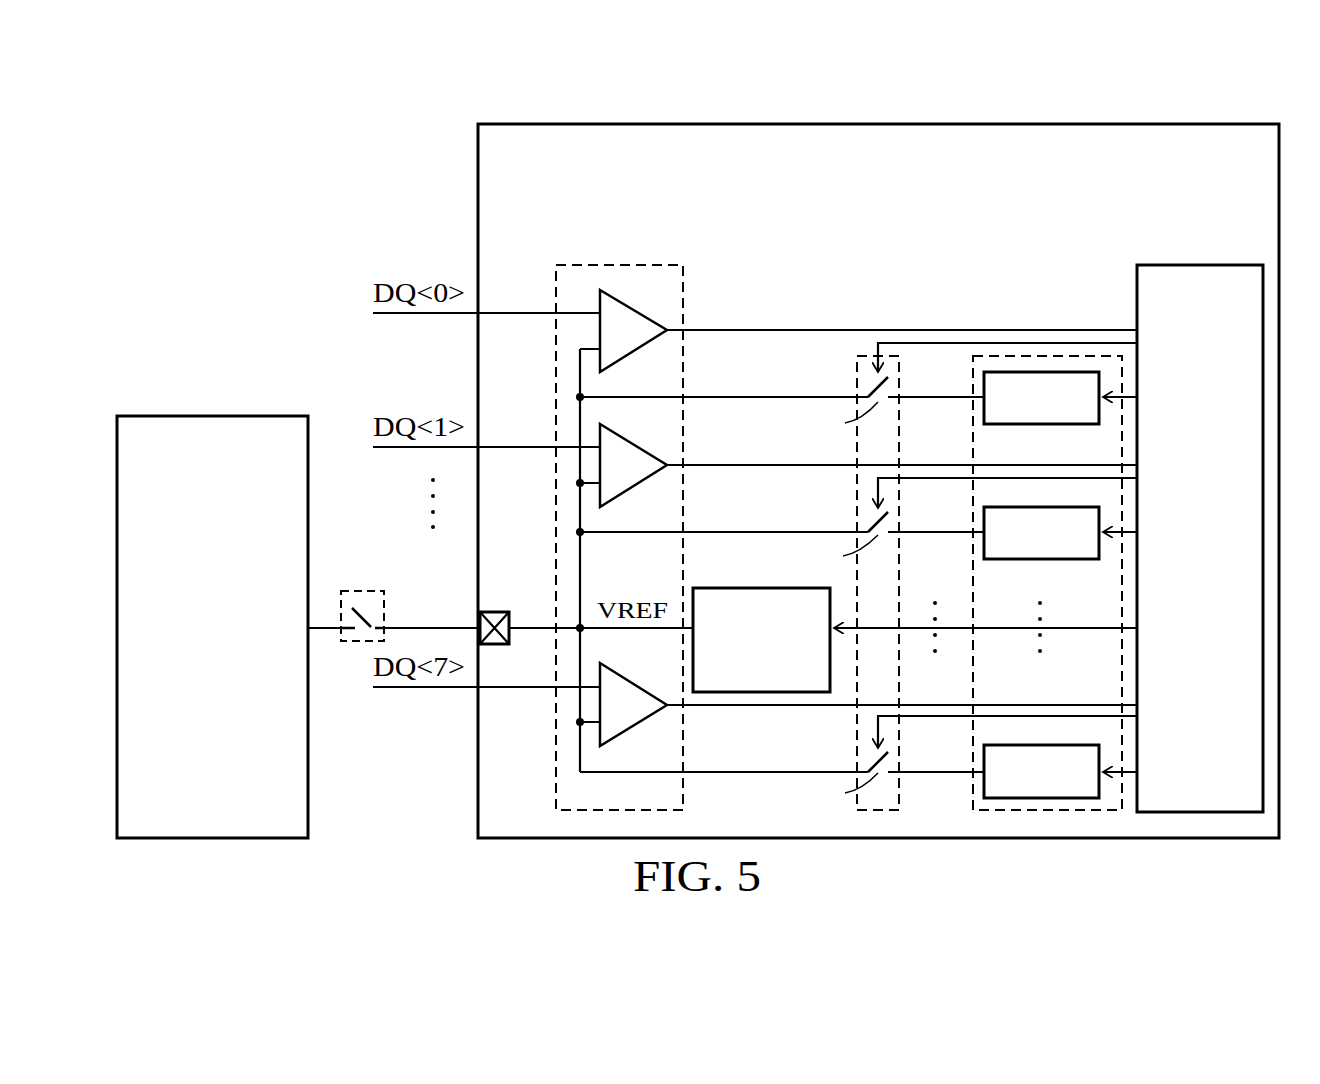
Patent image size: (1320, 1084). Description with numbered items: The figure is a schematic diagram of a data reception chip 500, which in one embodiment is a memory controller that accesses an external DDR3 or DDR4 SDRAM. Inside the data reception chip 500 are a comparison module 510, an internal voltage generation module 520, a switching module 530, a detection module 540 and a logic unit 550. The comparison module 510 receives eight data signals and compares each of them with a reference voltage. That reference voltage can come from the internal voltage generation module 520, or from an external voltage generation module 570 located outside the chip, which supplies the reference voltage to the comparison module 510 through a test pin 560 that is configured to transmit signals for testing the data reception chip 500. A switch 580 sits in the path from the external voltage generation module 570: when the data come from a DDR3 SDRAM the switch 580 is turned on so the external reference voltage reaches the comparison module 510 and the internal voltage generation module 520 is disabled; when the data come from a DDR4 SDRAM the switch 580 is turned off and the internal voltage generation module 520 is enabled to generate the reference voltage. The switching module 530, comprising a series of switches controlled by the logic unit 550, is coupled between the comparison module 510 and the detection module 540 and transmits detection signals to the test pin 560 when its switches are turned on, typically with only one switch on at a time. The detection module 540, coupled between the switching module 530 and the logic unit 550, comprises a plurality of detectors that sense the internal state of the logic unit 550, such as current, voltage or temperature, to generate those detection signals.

The data reception chip 500 is at (478, 126).
The comparison module 510 is at (558, 268).
The voltage generation module 520 is at (697, 590).
The switching module 530 is at (857, 378).
The detection module 540 is at (1046, 356).
The logic unit 550 is at (1140, 268).
The test pin 560 is at (497, 612).
The voltage generation module 570 is at (118, 418).
The switch 580 is at (343, 592).